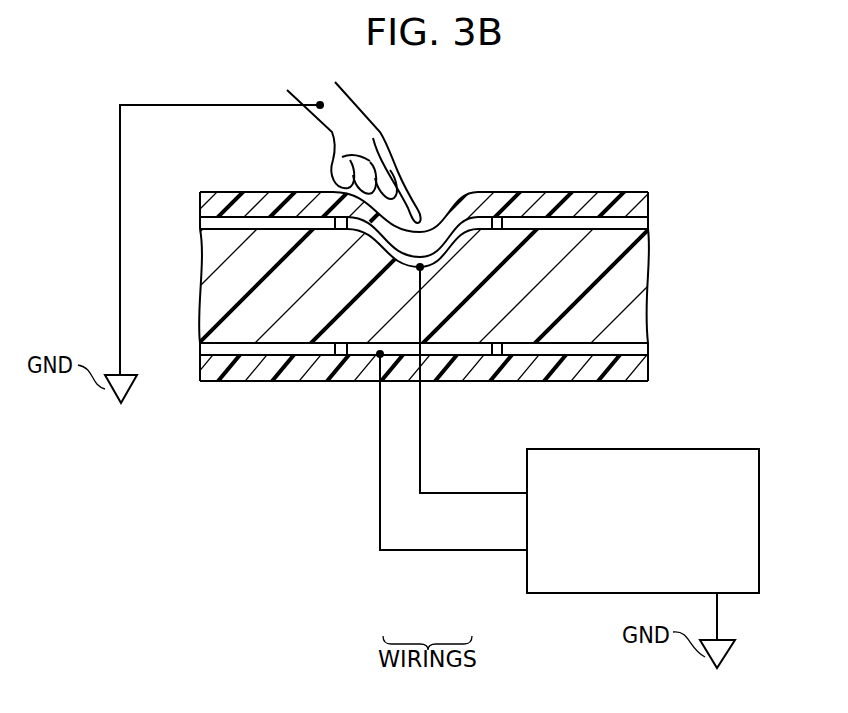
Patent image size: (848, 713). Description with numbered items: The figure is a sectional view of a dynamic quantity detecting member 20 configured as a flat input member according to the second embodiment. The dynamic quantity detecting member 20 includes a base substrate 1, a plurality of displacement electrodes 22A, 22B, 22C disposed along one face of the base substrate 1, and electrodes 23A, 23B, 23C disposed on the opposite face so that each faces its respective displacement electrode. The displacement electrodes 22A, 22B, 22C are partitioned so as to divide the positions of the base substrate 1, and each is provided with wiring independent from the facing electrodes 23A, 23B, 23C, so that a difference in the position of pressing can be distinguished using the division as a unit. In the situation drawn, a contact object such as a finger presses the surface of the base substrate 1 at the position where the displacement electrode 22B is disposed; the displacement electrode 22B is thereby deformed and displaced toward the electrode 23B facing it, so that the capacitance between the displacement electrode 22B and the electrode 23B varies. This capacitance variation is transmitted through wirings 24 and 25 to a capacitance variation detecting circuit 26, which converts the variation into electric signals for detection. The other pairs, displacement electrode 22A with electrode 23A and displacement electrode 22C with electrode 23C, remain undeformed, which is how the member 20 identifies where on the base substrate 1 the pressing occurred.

The base substrate 1 is at (637, 273).
The dynamic quantity detecting member 20 is at (394, 273).
The displacement electrode 22A is at (258, 223).
The displacement electrode 22B is at (473, 223).
The displacement electrode 22C is at (585, 225).
The electrode 23A is at (248, 350).
The electrode 23B is at (457, 348).
The electrode 23C is at (577, 348).
The wiring 24 is at (456, 495).
The wiring 25 is at (404, 552).
The capacitance variation detecting circuit 26 is at (745, 527).